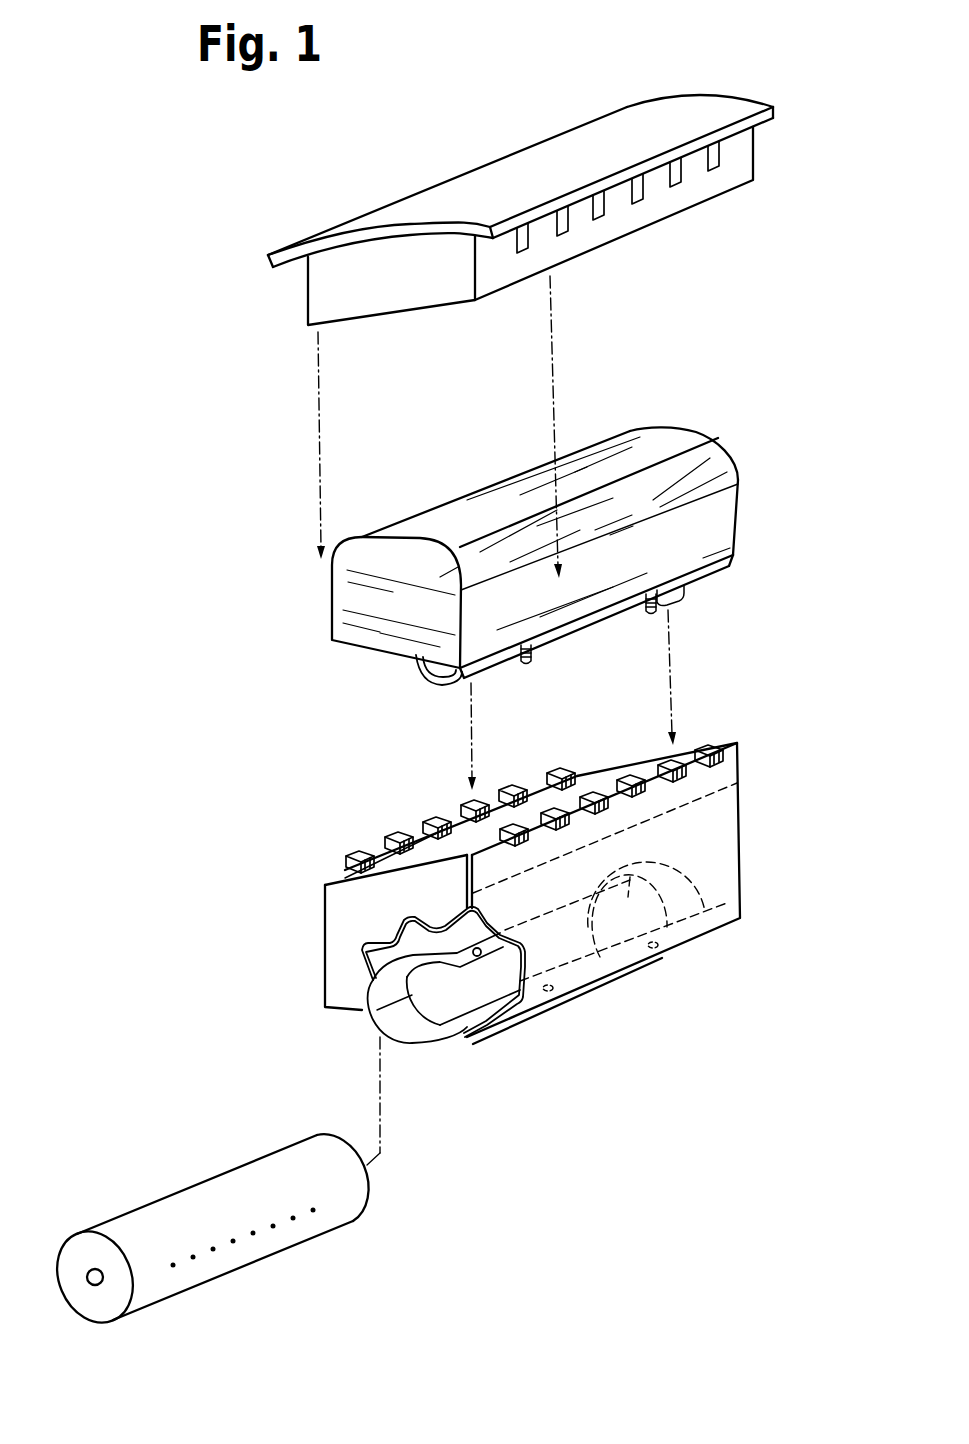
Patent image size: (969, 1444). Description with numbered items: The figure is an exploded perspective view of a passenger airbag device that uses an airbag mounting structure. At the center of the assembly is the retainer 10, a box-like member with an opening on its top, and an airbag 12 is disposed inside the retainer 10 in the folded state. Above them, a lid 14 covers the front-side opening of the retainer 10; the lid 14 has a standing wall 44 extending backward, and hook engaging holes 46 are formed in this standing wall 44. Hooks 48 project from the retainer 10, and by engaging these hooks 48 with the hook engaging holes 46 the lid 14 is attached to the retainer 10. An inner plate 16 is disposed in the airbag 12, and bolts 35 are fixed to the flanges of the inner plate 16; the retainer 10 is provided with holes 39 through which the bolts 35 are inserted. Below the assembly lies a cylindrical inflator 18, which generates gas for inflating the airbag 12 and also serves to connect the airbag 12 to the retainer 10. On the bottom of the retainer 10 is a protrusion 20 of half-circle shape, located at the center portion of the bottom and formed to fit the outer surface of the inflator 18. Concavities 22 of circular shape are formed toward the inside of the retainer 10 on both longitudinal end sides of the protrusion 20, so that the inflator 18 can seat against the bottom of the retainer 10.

The retainer 10 is at (498, 887).
The airbag 12 is at (515, 565).
The lid 14 is at (520, 223).
The inner plate 16 is at (443, 667).
The cylindrical inflator 18 is at (173, 1162).
The protrusion 20 is at (580, 995).
The concavities 22 is at (377, 1007).
The bolts 35 is at (531, 653).
The holes 39 is at (660, 948).
The standing wall 44 is at (647, 220).
The hook engaging holes 46 is at (561, 230).
The hooks 48 is at (390, 840).